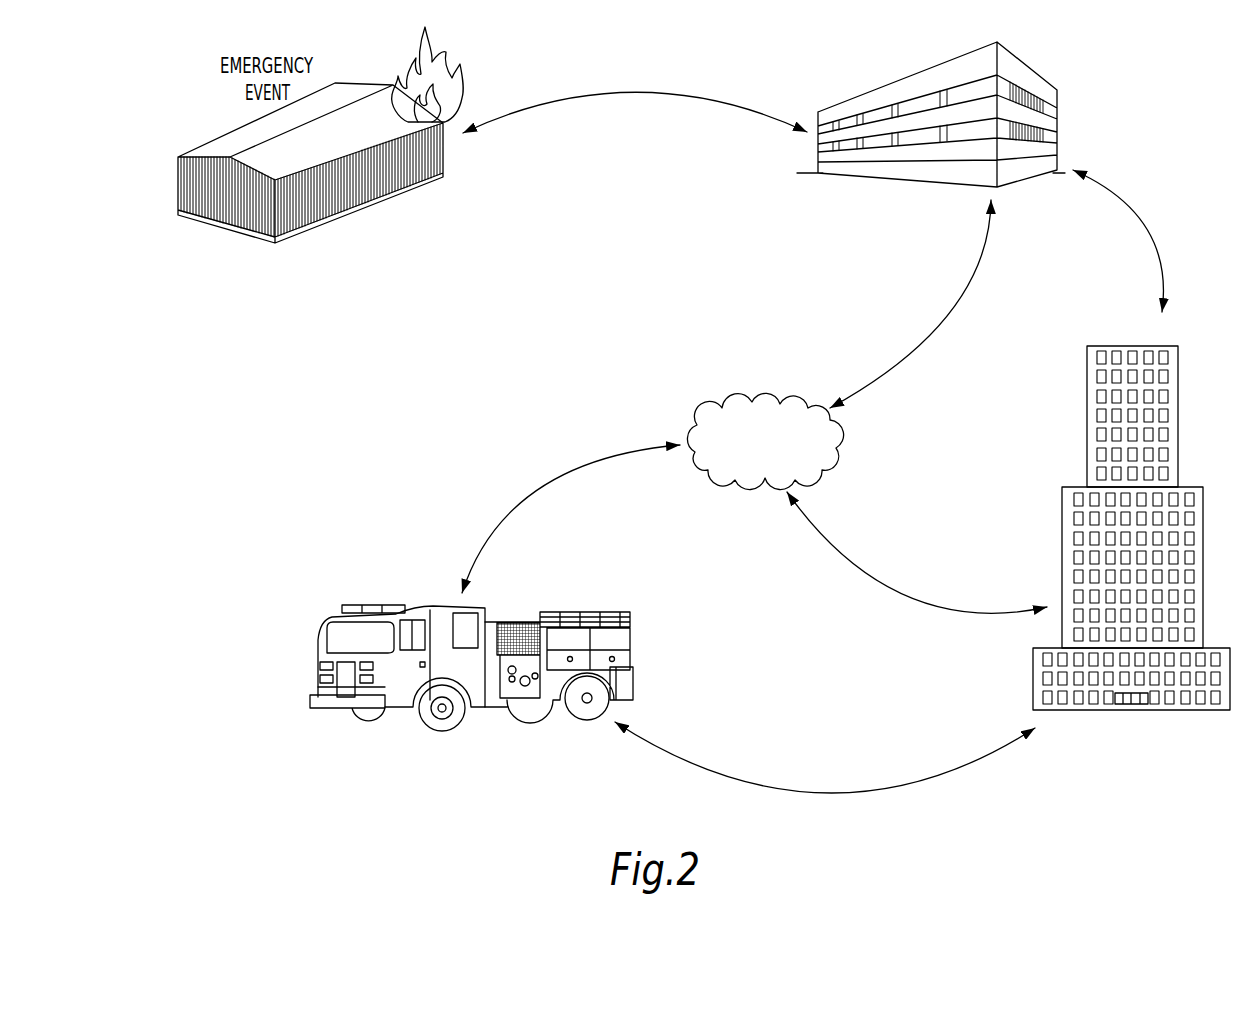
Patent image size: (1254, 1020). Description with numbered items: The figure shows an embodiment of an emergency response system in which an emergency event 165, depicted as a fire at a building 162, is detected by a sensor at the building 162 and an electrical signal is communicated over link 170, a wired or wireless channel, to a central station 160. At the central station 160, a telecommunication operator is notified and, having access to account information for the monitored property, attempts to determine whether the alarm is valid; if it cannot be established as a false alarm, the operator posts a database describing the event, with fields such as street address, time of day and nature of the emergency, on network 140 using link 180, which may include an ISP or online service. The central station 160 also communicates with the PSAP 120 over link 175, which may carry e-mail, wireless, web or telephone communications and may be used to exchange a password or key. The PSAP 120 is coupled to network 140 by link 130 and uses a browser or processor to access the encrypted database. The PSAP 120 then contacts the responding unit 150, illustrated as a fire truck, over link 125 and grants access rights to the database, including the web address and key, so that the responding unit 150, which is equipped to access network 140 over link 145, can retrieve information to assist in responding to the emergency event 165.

The PSAP 120 is at (1173, 378).
The link 125 is at (950, 770).
The link 130 is at (913, 597).
The network 140 is at (828, 433).
The communication link between emergency responder and network 145 is at (515, 522).
The responding unit 150 is at (330, 633).
The central station 160 is at (1052, 98).
The building 162 is at (430, 158).
The emergency event 165 is at (457, 76).
The link 170 is at (728, 102).
The link 175 is at (1140, 228).
The link 180 is at (935, 327).